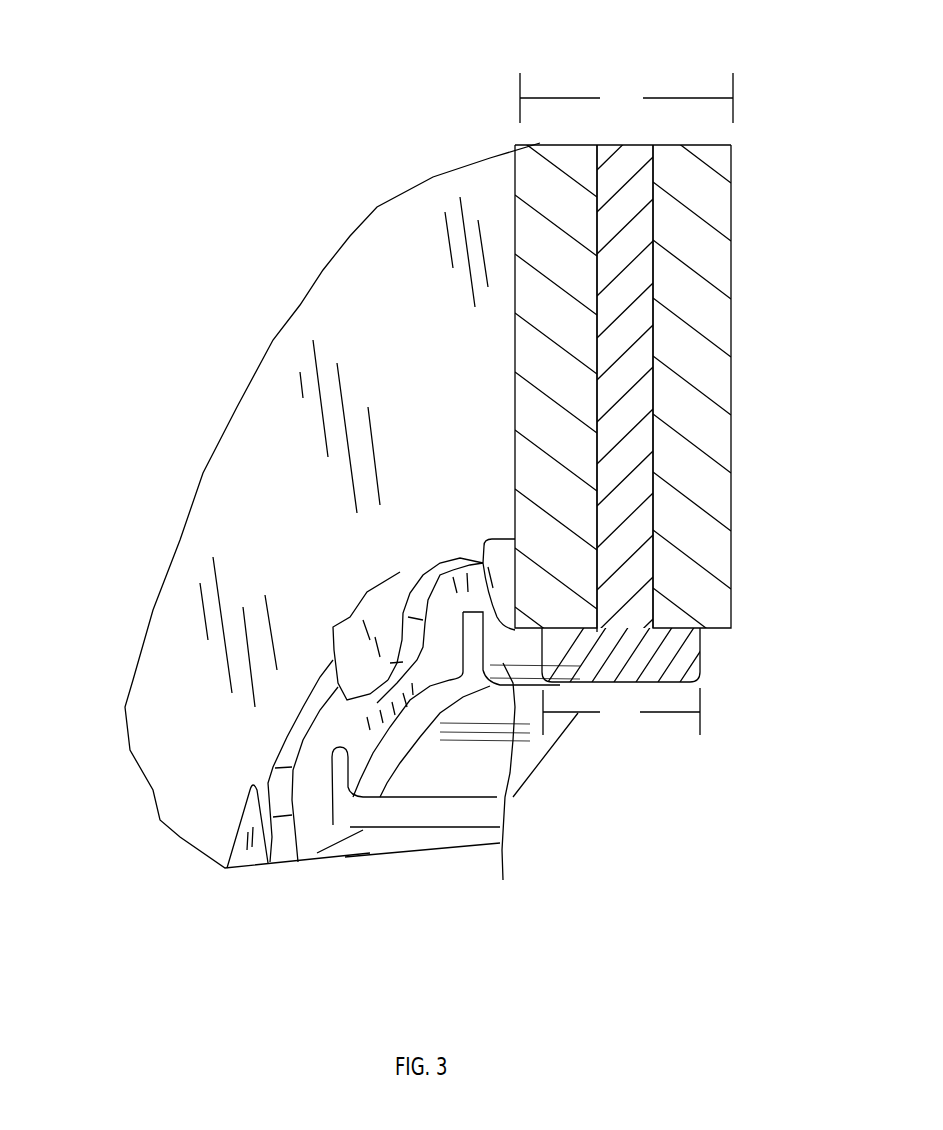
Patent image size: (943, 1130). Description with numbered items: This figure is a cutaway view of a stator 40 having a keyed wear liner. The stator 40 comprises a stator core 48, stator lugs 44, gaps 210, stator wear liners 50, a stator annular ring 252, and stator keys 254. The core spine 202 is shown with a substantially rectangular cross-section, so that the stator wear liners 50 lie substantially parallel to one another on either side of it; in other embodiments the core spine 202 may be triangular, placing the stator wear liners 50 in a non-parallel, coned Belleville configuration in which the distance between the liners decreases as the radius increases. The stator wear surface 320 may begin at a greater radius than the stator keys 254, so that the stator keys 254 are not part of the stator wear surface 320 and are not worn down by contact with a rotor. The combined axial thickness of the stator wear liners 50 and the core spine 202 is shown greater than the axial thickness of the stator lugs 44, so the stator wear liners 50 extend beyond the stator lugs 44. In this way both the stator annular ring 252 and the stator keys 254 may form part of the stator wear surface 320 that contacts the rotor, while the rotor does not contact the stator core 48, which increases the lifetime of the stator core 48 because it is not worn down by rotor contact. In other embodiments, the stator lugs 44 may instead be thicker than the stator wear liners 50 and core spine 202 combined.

The stator 40 is at (172, 97).
The stator wear surface 320 is at (183, 665).
The stator annular ring 252 is at (430, 313).
The stator keys 254 is at (357, 633).
The gaps 210 is at (352, 815).
The stator lugs 44 is at (443, 743).
The stator wear liners 50 is at (667, 373).
The core spine 202 is at (627, 400).
The stator core 48 is at (627, 662).